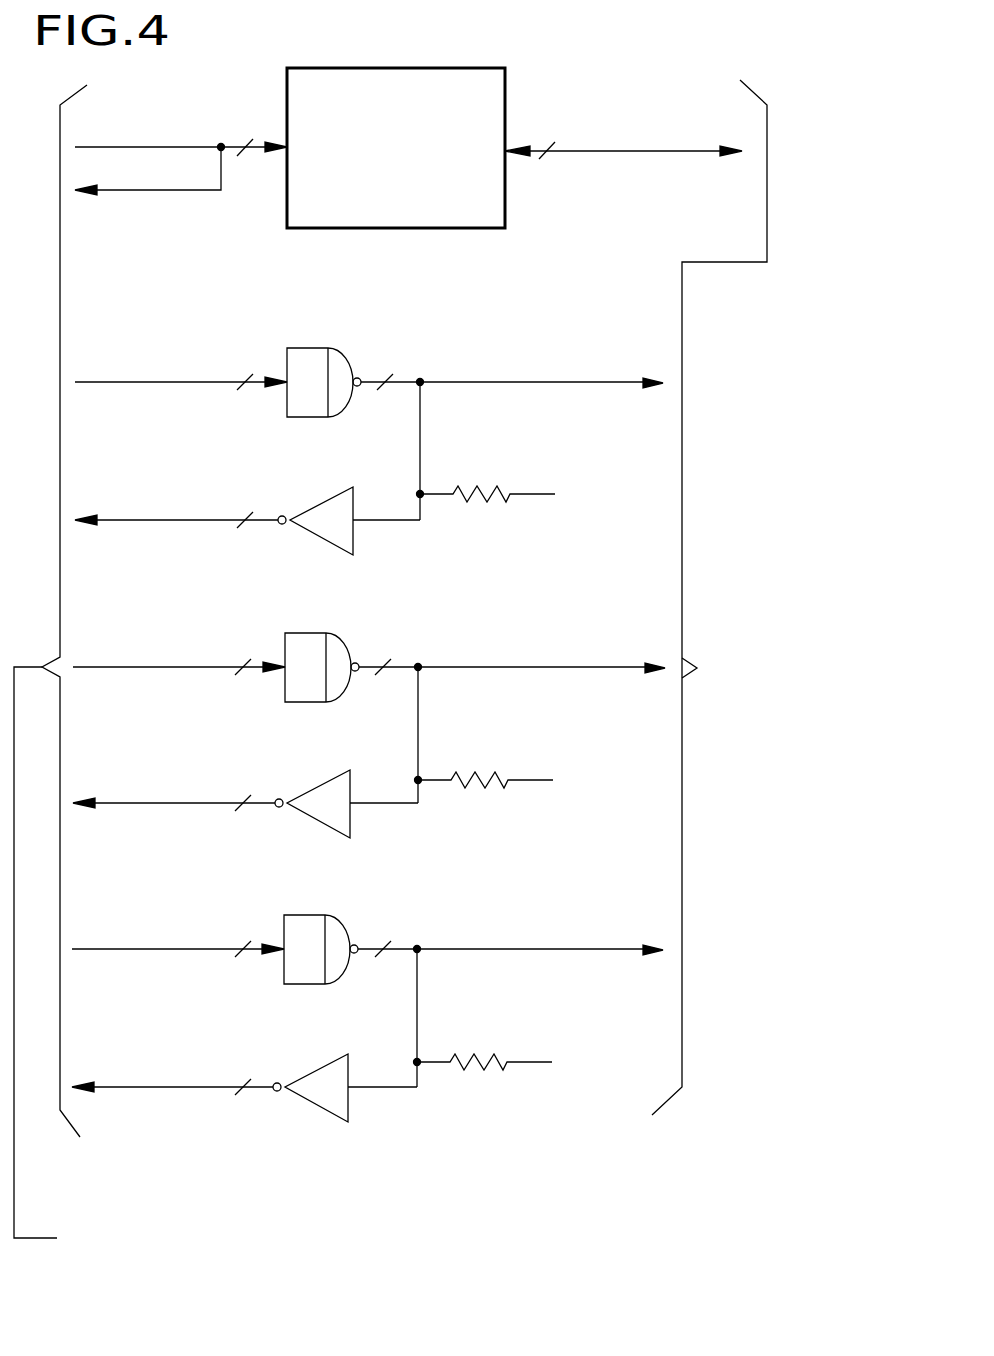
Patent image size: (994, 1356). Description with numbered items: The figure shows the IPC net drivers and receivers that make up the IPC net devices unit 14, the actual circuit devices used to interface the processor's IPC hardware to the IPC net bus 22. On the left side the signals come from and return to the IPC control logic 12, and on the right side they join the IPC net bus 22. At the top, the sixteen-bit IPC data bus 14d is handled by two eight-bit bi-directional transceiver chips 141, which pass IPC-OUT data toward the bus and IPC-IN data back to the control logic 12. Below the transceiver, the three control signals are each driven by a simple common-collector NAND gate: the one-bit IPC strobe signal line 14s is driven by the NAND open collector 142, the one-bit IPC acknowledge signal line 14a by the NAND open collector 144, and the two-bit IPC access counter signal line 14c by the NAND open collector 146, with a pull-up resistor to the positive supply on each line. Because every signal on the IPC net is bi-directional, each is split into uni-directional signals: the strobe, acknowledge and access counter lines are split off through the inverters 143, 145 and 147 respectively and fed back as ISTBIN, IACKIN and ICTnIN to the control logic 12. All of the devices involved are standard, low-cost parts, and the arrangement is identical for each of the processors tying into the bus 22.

The IPC net devices unit 14 is at (507, 1169).
The IPC control logic unit 12 is at (130, 979).
The IPC net bus 22 is at (776, 670).
The bi-directional transceiver chips 141 is at (390, 228).
The IPC data bus 14d is at (672, 152).
The NAND open collector gate 142 is at (334, 360).
The inverter 143 is at (313, 500).
The IPC strobe signal line 14s is at (567, 385).
The NAND open collector gate 144 is at (313, 633).
The inverter 145 is at (322, 780).
The IPC acknowledge signal line 14a is at (573, 668).
The NAND open collector gate 146 is at (325, 922).
The inverter 147 is at (322, 1062).
The IPC access counter signal line 14c is at (563, 952).